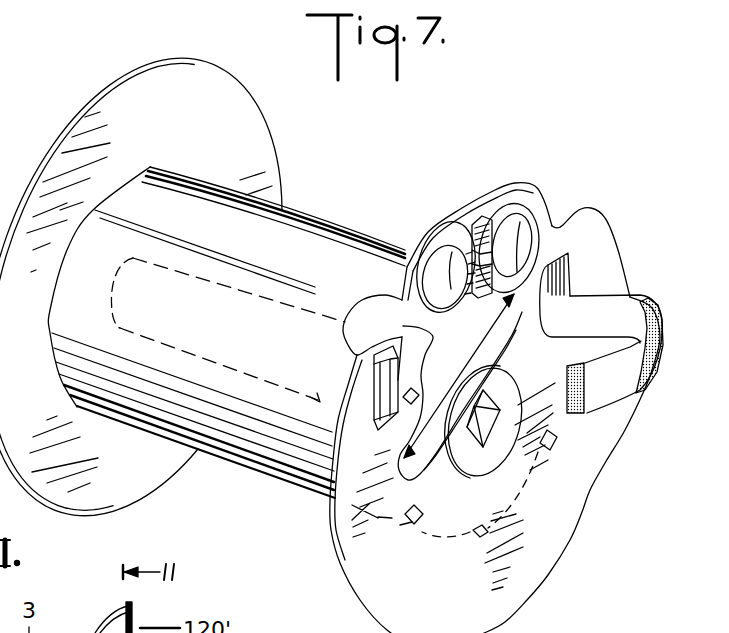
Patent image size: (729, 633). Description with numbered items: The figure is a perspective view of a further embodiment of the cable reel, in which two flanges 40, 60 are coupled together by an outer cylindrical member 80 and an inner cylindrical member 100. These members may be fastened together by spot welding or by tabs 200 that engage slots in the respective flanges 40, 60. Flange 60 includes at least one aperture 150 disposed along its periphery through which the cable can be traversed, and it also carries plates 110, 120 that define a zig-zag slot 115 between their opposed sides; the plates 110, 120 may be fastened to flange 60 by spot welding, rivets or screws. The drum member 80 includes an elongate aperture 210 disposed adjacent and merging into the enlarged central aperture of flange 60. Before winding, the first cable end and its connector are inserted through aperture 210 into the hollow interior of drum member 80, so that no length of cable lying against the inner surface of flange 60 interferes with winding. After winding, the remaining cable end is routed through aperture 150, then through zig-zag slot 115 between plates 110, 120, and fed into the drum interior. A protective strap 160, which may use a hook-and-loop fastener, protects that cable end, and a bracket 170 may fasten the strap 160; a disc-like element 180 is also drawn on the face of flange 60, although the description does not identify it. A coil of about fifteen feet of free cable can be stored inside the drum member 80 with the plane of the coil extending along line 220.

The flange 40 is at (127, 83).
The flange 60 is at (575, 510).
The outer cylindrical member 80 is at (292, 220).
The inner cylindrical member 100 is at (231, 367).
The plate 110 is at (455, 233).
The zig-zag slot 115 is at (477, 226).
The plate 120 is at (499, 220).
The aperture 150 is at (565, 212).
The protective strap 160 is at (618, 392).
The bracket 170 is at (385, 388).
The disc knob 180 is at (478, 446).
The tabs 200 is at (409, 524).
The elongate aperture 210 is at (350, 330).
The line 220 is at (560, 345).